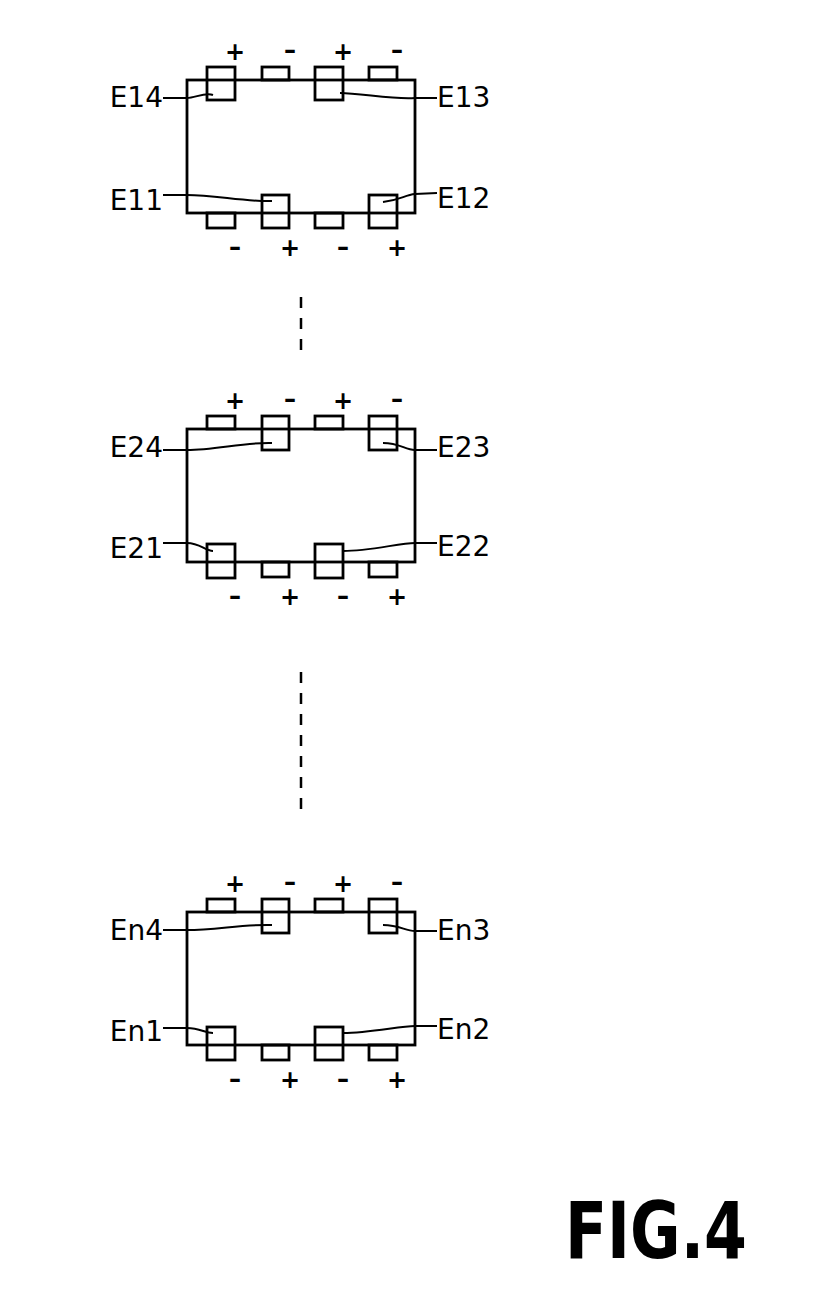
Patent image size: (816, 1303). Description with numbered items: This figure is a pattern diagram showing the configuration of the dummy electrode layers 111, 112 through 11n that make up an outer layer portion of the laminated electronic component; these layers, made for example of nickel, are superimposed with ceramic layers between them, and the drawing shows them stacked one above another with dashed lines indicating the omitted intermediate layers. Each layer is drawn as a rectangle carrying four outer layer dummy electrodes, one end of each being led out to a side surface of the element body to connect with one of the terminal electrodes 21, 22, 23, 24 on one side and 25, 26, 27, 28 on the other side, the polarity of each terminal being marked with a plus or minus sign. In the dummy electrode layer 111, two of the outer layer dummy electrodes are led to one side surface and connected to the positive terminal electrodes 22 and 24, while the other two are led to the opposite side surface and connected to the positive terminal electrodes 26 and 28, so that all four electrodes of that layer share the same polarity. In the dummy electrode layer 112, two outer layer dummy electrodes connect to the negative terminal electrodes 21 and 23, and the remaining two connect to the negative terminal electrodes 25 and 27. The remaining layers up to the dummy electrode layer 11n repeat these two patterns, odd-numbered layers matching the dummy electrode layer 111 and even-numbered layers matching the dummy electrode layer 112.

The dummy electrode layer 111 is at (92, 153).
The dummy electrode layer 112 is at (92, 503).
The dummy electrode layer 11n is at (92, 986).
The terminal electrode 21 is at (221, 228).
The terminal electrode 22 is at (275, 228).
The terminal electrode 23 is at (329, 228).
The terminal electrode 24 is at (382, 228).
The terminal electrode 25 is at (382, 70).
The terminal electrode 26 is at (329, 70).
The terminal electrode 27 is at (275, 70).
The terminal electrode 28 is at (221, 70).